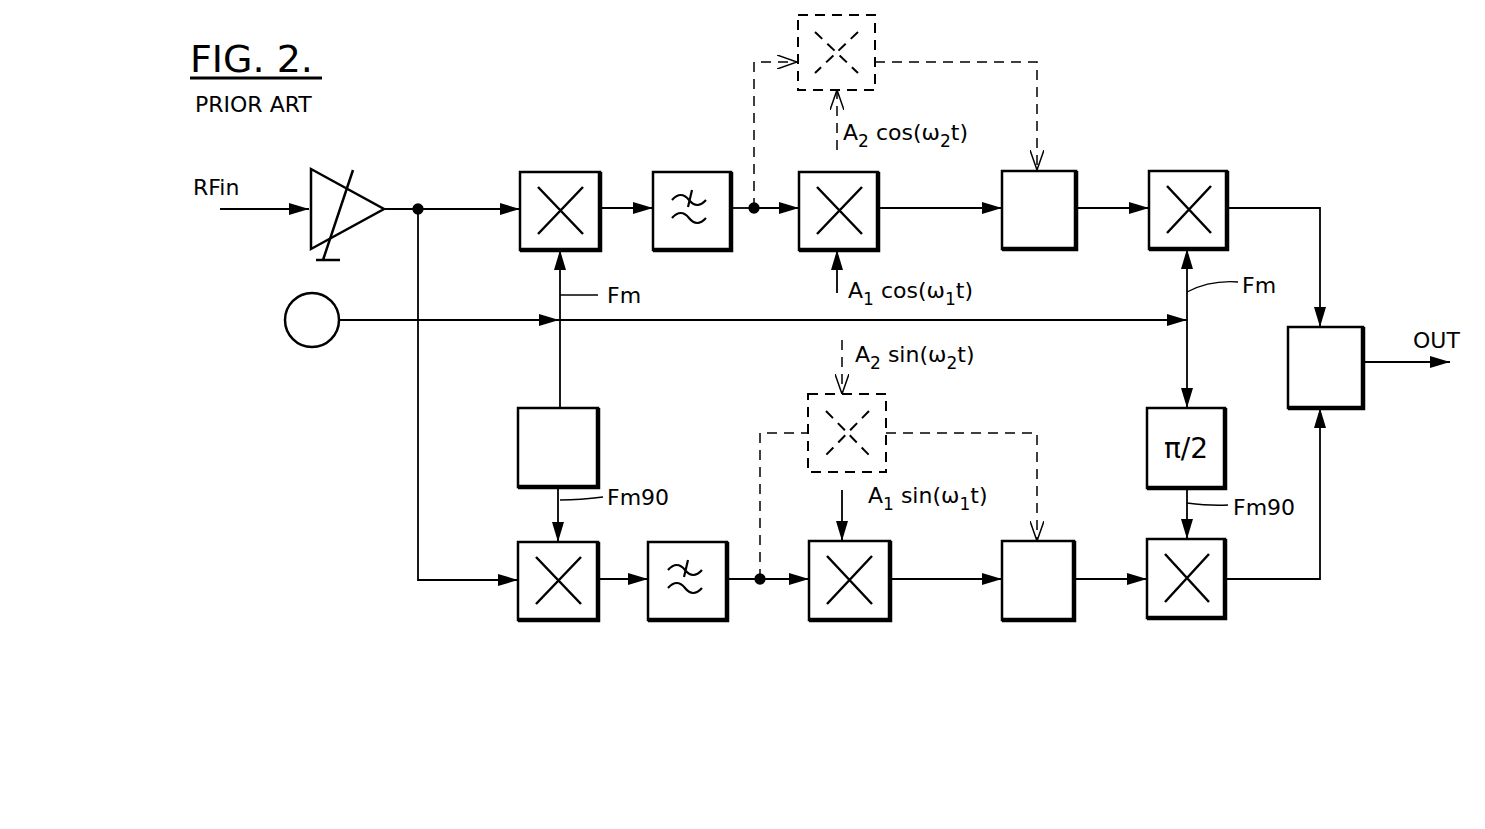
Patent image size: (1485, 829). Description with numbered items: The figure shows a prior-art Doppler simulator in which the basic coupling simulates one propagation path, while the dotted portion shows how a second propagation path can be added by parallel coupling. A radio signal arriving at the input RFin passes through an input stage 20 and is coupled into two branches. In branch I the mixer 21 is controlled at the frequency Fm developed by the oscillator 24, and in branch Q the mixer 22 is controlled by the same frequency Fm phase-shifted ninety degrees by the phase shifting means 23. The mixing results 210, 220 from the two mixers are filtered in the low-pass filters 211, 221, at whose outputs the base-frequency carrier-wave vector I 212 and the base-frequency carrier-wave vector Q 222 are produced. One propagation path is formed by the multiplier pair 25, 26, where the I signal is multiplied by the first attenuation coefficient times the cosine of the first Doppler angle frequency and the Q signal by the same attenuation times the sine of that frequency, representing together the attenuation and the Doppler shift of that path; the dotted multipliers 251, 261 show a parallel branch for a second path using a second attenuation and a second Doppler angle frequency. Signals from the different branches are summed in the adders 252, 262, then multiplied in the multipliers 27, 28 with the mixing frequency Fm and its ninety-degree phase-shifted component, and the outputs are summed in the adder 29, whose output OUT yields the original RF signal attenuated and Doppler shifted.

The input amplifier 20 is at (323, 167).
The mixer 21 is at (520, 180).
The mixer 22 is at (518, 556).
The phase shifting means 23 is at (598, 418).
The oscillator 24 is at (312, 320).
The multiplier 25 is at (878, 183).
The multiplier 26 is at (892, 558).
The multiplier 27 is at (1227, 178).
The multiplier 28 is at (1225, 590).
The adder 29 is at (1363, 408).
The mixing result 210 is at (612, 209).
The low-pass filter 211 is at (690, 172).
The base-frequency carrier-wave vector I 212 is at (742, 208).
The mixing result 220 is at (618, 577).
The low-pass filter 221 is at (697, 540).
The base-frequency carrier-wave vector Q 222 is at (735, 580).
The optional mixer 251 is at (877, 40).
The adder 252 is at (1045, 249).
The optional mixer 261 is at (887, 418).
The adder 262 is at (1060, 538).